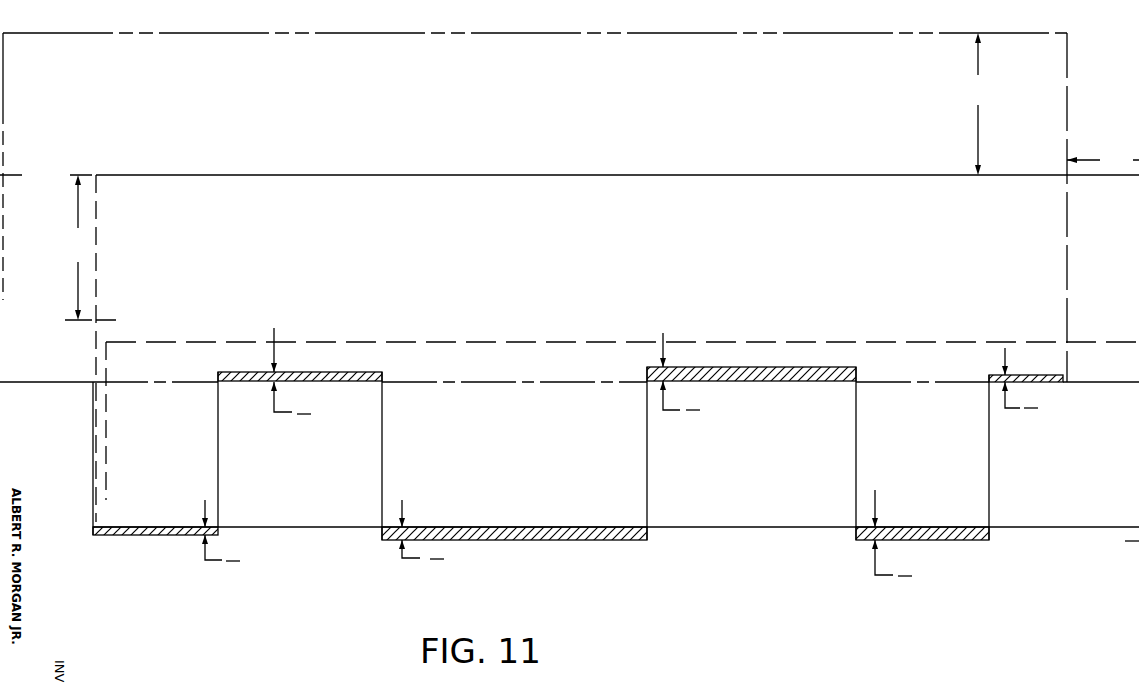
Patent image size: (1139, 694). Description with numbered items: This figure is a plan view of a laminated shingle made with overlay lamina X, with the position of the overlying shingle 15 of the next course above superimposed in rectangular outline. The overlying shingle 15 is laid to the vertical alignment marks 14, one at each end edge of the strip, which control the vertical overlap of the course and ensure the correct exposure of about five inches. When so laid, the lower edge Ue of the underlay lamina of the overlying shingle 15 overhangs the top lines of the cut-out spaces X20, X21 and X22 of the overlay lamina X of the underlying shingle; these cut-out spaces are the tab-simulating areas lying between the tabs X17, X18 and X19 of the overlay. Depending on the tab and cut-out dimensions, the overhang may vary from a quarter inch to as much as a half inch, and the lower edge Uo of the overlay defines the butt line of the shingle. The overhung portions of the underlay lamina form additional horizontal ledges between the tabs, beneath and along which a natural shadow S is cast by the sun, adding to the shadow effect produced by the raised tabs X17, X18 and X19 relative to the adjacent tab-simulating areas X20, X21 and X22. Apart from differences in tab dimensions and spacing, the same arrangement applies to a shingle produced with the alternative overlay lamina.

The vertical alignment marks 14 is at (22, 175).
The overlying shingle 15 is at (525, 124).
The overlay lamina X is at (525, 308).
The tab of overlay X X17 is at (131, 484).
The tab of overlay X X18 is at (476, 484).
The tab of overlay X X19 is at (895, 484).
The cut-out space X20 is at (271, 484).
The cut-out space X21 is at (738, 484).
The cut-out space X22 is at (1055, 484).
The natural shadow S is at (262, 384).
The lower edge of underlay lamina Ue is at (70, 383).
The lower edge of overlay lamina Uo is at (93, 449).